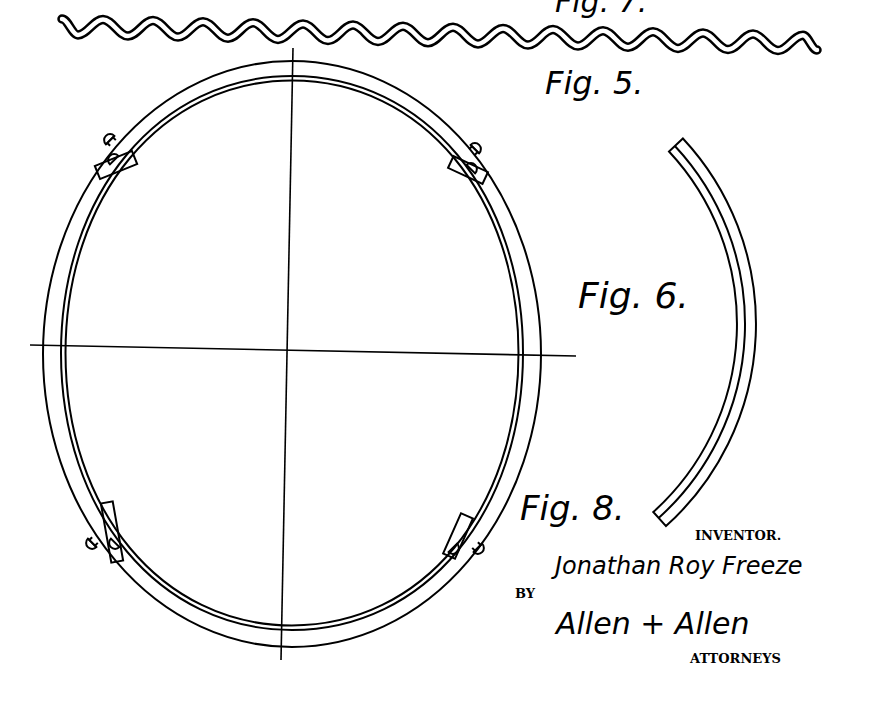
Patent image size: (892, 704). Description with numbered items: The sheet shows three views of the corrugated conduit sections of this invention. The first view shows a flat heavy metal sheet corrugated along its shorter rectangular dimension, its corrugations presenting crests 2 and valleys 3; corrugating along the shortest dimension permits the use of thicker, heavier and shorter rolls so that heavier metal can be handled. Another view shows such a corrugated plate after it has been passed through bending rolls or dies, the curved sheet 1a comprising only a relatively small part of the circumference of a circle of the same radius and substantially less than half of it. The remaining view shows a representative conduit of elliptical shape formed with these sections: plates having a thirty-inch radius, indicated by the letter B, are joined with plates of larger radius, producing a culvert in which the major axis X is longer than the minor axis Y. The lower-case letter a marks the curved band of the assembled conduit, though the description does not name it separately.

In FIG. 5, the crests 2 is at (462, 27).
In FIG. 5, the valleys 3 is at (553, 42).
In FIG. 6, the inner band of hoop a is at (522, 358).
In FIG. 6, the major axis X is at (294, 247).
In FIG. 6, the minor axis Y is at (396, 355).
In FIG. 6, the plates having a radius of 30 inches B is at (371, 86).
In FIG. 8, the curved sheet 1a is at (693, 181).